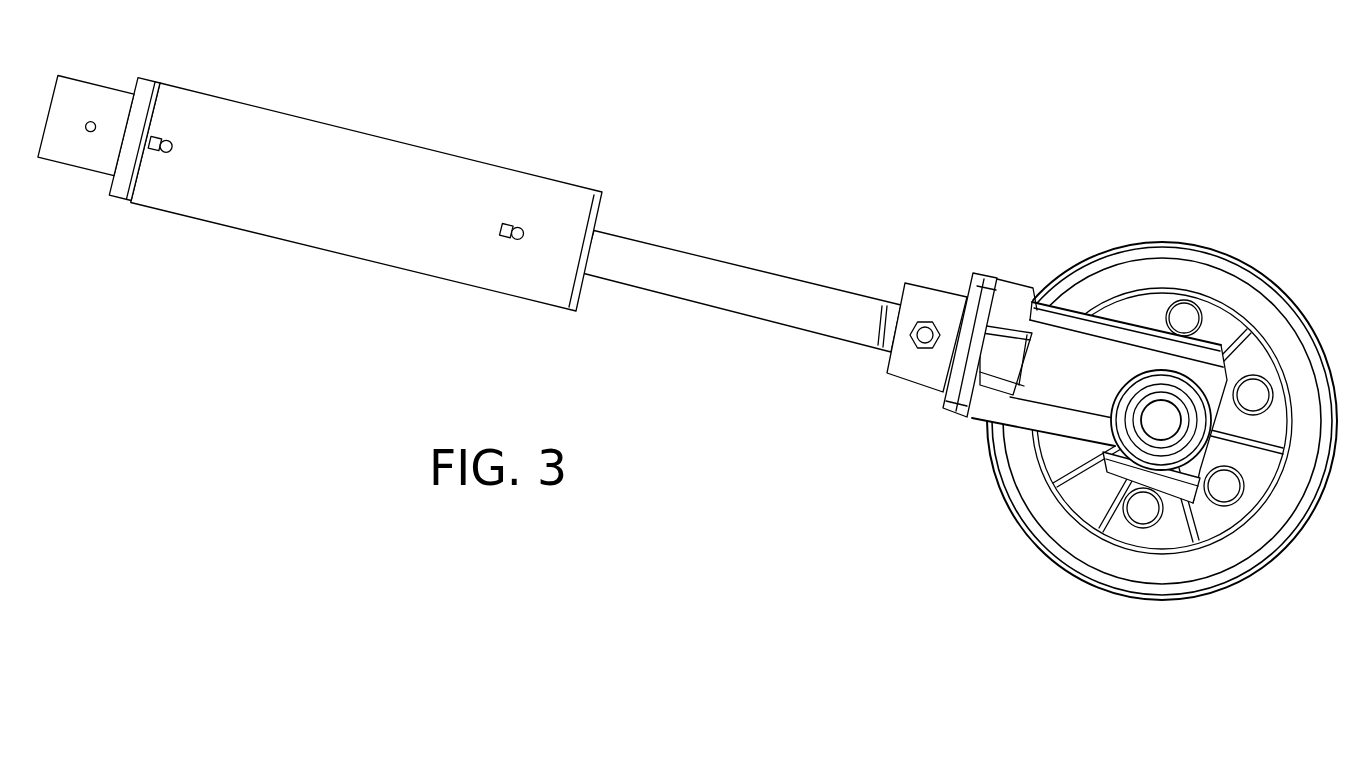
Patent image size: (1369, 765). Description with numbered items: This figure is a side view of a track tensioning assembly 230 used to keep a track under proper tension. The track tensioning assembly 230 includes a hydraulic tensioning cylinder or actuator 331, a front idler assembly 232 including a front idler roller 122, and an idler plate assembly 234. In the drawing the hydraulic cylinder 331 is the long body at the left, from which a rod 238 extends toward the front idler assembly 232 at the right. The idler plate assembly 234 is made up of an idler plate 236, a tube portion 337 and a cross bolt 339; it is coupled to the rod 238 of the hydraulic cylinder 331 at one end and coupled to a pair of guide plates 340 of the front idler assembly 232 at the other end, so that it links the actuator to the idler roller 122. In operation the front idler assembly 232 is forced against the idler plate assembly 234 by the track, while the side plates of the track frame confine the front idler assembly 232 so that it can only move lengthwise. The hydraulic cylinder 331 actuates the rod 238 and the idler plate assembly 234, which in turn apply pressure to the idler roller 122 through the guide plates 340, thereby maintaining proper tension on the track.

The track tensioning assembly 230 is at (502, 223).
The front idler assembly 232 is at (1093, 368).
The front idler roller 122 is at (1279, 290).
The idler plate 236 is at (992, 274).
The tube portion 337 is at (932, 288).
The cross bolt 339 is at (913, 349).
The rod 238 is at (770, 323).
The hydraulic tensioning cylinder 331 is at (331, 124).
The guide plates 340 is at (1030, 417).
The idler plate assembly 234 is at (922, 404).